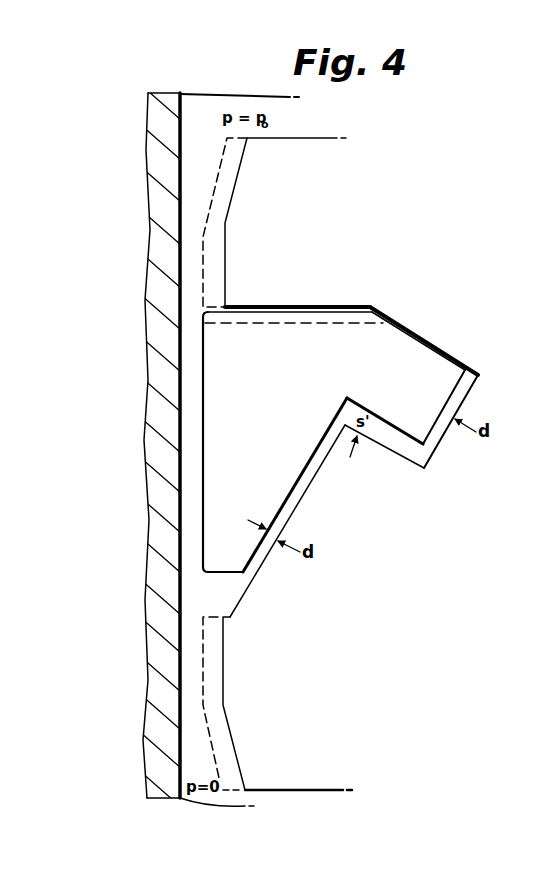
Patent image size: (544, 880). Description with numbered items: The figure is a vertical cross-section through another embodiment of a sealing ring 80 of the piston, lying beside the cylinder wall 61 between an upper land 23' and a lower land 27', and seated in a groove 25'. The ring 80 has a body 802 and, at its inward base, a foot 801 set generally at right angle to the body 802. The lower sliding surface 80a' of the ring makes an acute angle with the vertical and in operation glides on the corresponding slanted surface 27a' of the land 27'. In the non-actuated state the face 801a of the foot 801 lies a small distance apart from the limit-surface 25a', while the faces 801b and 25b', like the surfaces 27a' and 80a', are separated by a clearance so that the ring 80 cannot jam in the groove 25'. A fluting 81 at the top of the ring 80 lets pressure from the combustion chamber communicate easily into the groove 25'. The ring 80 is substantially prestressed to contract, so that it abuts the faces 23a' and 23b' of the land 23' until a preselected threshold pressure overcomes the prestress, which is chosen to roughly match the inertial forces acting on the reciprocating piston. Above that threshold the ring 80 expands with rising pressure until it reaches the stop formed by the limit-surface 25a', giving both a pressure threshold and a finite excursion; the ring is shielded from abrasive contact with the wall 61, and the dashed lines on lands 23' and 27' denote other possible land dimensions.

The wall 61 is at (182, 122).
The land 23' is at (346, 256).
The face of land 23' 23a' is at (297, 287).
The face of land 23' 23b' is at (429, 341).
The fluting 81 is at (312, 315).
The sealing ring 80 is at (334, 442).
The body 802 is at (250, 390).
The foot 801 is at (406, 378).
The face of foot 801 801a is at (441, 408).
The face of foot 801 801b is at (460, 379).
The lower sliding surface 80a' is at (295, 485).
The groove 25' is at (437, 431).
The limit-surface 25a' is at (384, 461).
The face 25b' is at (477, 412).
The land 27' is at (280, 607).
The slanted surface 27a' is at (294, 521).